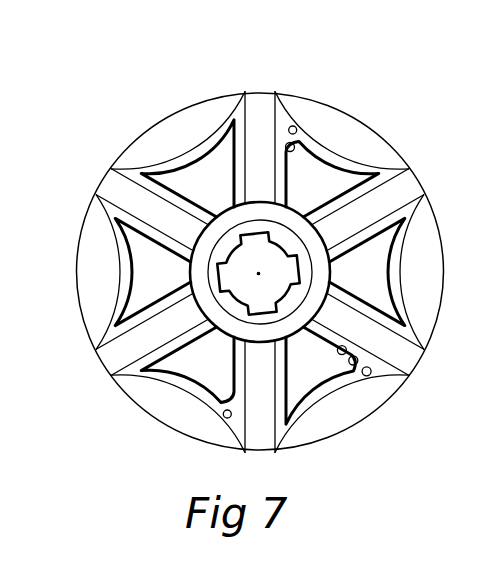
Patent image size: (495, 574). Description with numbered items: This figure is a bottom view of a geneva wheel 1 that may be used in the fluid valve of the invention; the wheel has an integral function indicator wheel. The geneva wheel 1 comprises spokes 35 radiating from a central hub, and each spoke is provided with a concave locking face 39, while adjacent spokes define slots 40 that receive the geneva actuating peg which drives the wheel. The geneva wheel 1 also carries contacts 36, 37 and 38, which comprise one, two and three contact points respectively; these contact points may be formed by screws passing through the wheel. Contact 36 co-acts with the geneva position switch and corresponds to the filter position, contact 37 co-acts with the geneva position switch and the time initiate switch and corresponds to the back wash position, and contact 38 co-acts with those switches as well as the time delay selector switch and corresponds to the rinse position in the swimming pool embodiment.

The geneva wheel 1 is at (126, 121).
The spokes 35 is at (212, 165).
The contact 36 is at (224, 416).
The contact 37 is at (293, 126).
The contact 38 is at (373, 372).
The concave locking faces 39 is at (355, 162).
The slots 40 is at (403, 188).